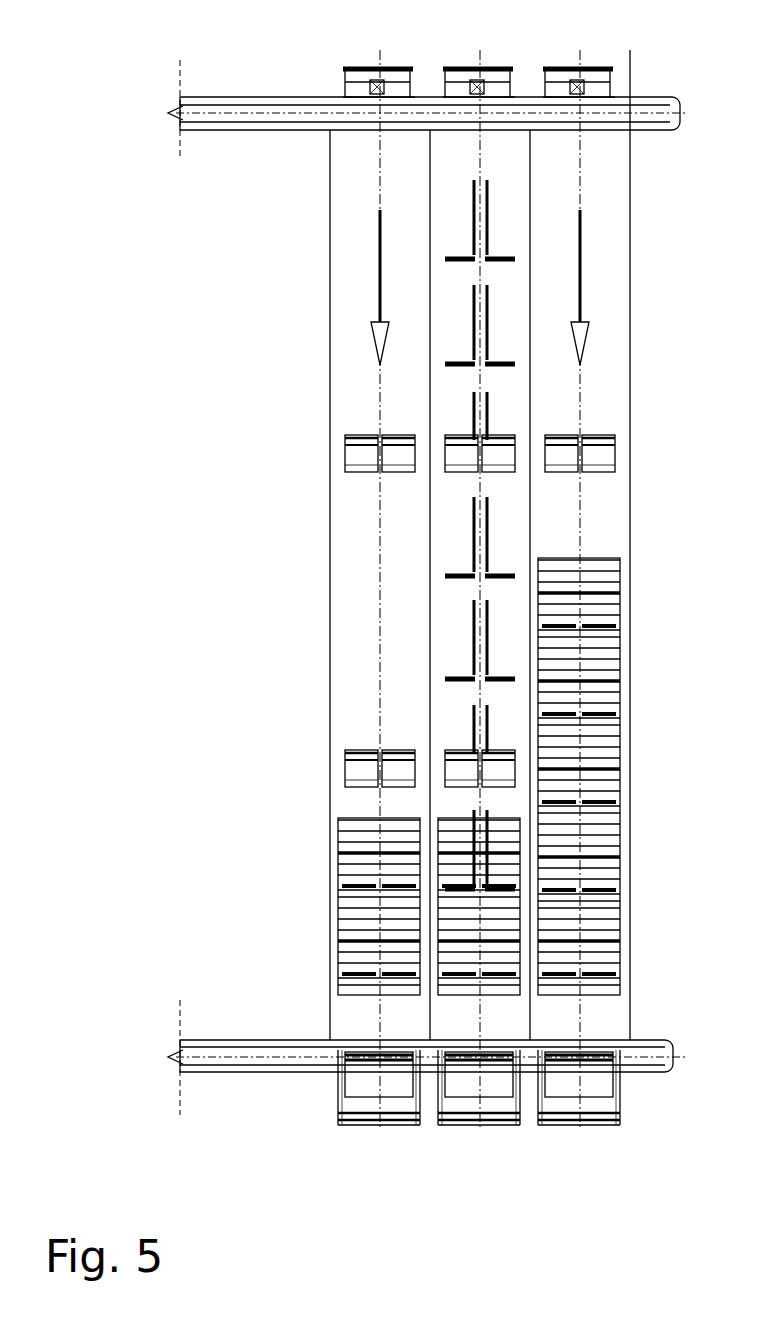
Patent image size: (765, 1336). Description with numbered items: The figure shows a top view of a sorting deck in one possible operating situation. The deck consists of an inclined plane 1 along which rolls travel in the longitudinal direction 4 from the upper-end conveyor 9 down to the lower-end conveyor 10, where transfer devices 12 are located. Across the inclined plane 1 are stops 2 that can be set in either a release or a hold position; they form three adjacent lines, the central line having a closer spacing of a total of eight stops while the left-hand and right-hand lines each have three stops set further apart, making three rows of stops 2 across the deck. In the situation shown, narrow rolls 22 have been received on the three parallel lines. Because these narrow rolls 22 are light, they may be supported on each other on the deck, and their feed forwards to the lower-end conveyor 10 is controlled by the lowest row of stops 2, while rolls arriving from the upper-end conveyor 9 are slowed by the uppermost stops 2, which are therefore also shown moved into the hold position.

The inclined plane 1 is at (346, 275).
The stops 2 is at (496, 258).
The longitudinal direction 4 is at (584, 335).
The upper-end conveyor 9 is at (180, 114).
The lower-end conveyor 10 is at (175, 1051).
The transfer devices 12 is at (342, 1120).
The narrow rolls 22 is at (578, 562).